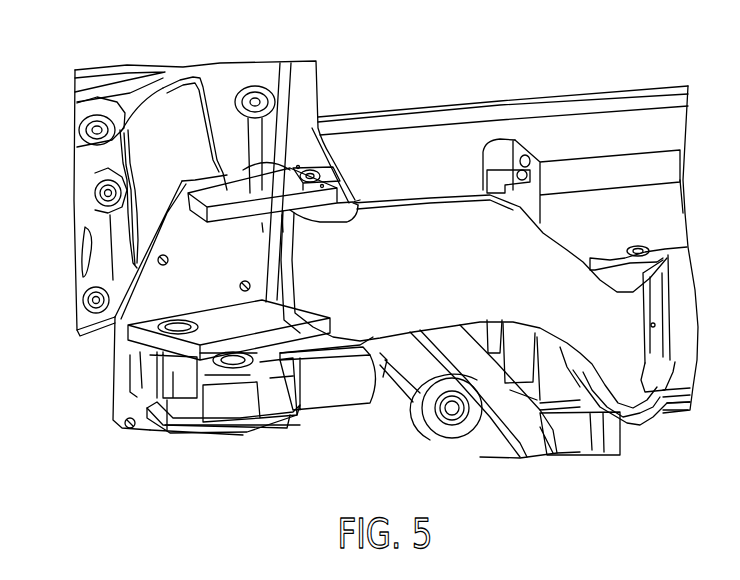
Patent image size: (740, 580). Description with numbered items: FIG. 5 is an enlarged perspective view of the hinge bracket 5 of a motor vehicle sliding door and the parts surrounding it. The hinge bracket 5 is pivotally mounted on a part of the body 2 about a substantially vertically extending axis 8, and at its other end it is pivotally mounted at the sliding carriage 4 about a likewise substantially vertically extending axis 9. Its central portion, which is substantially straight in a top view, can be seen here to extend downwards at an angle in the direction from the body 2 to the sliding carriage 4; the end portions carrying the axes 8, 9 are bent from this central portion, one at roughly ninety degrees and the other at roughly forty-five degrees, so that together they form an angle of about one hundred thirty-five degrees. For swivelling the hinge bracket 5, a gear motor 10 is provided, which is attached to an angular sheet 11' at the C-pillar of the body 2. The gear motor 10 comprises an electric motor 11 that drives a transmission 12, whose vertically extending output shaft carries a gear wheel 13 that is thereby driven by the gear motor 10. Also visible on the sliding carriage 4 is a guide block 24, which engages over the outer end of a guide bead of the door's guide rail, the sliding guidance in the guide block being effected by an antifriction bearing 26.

The body 2 is at (167, 92).
The sliding carriage 4 is at (652, 70).
The hinge bracket 5 is at (577, 357).
The axis 8 is at (317, 242).
The axis 9 is at (650, 295).
The gear motor 10 is at (243, 452).
The electric motor 11 is at (289, 395).
The angular sheet 11' is at (229, 312).
The transmission 12 is at (170, 395).
The gear wheel 13 is at (181, 355).
The guide block 24 is at (550, 147).
The antifriction bearing 26 is at (513, 165).